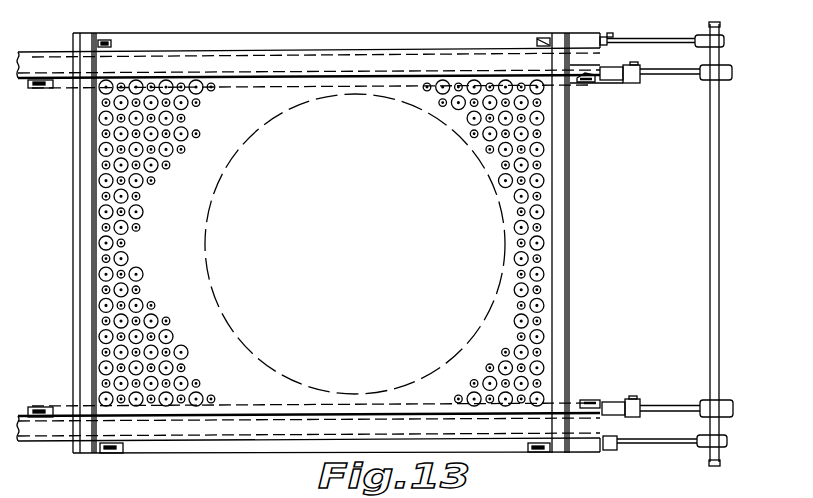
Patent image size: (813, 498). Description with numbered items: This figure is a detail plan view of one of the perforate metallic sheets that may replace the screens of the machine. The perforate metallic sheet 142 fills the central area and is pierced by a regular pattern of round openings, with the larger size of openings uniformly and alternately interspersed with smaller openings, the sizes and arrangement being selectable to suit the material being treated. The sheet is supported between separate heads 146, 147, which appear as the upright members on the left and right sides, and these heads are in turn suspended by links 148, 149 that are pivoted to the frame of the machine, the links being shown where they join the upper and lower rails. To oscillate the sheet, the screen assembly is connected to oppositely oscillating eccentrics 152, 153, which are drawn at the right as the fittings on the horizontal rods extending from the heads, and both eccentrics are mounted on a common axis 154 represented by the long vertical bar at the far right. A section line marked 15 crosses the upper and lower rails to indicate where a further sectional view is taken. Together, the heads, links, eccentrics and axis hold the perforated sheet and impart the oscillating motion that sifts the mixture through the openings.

The perforate metallic sheet 142 is at (214, 388).
The head 146 is at (80, 226).
The head 147 is at (570, 248).
The link 148 is at (99, 39).
The link 149 is at (42, 88).
The eccentric 152 is at (703, 80).
The eccentric 153 is at (722, 45).
The axis 154 is at (745, 116).
The section line 15 is at (195, 73).